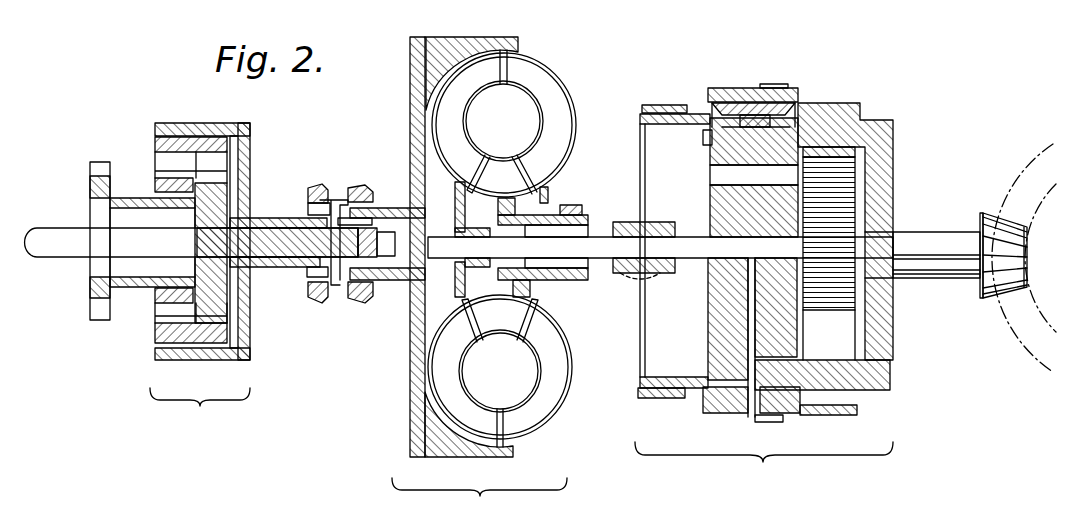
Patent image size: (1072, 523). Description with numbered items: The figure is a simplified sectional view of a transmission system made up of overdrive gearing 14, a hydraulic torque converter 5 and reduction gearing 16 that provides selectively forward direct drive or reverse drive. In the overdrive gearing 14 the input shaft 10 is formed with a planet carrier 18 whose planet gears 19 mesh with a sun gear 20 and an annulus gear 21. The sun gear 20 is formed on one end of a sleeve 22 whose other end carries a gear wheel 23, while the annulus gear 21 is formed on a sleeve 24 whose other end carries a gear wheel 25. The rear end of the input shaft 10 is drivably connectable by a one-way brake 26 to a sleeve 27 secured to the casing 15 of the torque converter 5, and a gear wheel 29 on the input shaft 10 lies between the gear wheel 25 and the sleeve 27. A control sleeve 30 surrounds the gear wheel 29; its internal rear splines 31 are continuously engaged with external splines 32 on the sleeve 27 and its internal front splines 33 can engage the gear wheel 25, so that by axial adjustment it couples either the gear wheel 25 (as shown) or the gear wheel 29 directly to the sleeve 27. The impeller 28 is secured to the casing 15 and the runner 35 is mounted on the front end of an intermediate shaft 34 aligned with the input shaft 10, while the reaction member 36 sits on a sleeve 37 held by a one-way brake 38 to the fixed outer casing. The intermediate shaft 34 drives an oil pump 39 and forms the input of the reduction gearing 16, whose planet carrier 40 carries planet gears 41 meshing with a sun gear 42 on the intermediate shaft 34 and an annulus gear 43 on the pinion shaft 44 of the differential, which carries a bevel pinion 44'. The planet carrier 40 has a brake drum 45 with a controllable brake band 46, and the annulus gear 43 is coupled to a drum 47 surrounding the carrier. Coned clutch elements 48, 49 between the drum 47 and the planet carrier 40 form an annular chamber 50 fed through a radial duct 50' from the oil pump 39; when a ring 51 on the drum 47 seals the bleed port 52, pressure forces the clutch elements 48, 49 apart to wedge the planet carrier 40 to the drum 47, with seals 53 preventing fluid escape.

The hydraulic torque converter 5 is at (502, 267).
The input shaft 10 is at (78, 234).
The overdrive gearing 14 is at (201, 262).
The casing 15 is at (410, 80).
The gearing 16 is at (781, 267).
The planet carrier 18 is at (225, 182).
The planet gears 19 is at (175, 138).
The sun gear 20 is at (155, 196).
The annulus gear 21 is at (195, 130).
The sleeve 22 is at (135, 290).
The gear wheel 23 is at (90, 316).
The sleeve 24 is at (262, 216).
The gear wheel 25 is at (310, 280).
The one-way brake 26 is at (382, 226).
The sleeve 27 is at (388, 282).
The impeller 28 is at (540, 80).
The gear wheel 29 is at (340, 300).
The control sleeve 30 is at (320, 186).
The internal rear splines 31 is at (360, 184).
The external splines 32 is at (390, 207).
The internal front splines 33 is at (312, 202).
The intermediate shaft 34 is at (440, 262).
The runner 35 is at (480, 52).
The reaction member 36 is at (510, 170).
The sleeve 37 is at (555, 212).
The one-way brake 38 is at (580, 290).
The oil pump 39 is at (648, 224).
The planet carrier 40 is at (706, 316).
The planet gears 41 is at (858, 168).
The sun gear 42 is at (830, 236).
The annulus gear 43 is at (880, 118).
The pinion shaft 44 is at (936, 271).
The bevel pinion 44' is at (991, 271).
The brake drum 45 is at (672, 126).
The brake band 46 is at (662, 104).
The drum 47 is at (797, 88).
The coned clutch element 48 is at (688, 392).
The coned clutch element 49 is at (857, 410).
The annular chamber 50 is at (749, 98).
The radial duct 50' is at (706, 337).
The ring 51 is at (778, 87).
The bleed port 52 is at (752, 418).
The seals 53 is at (712, 412).